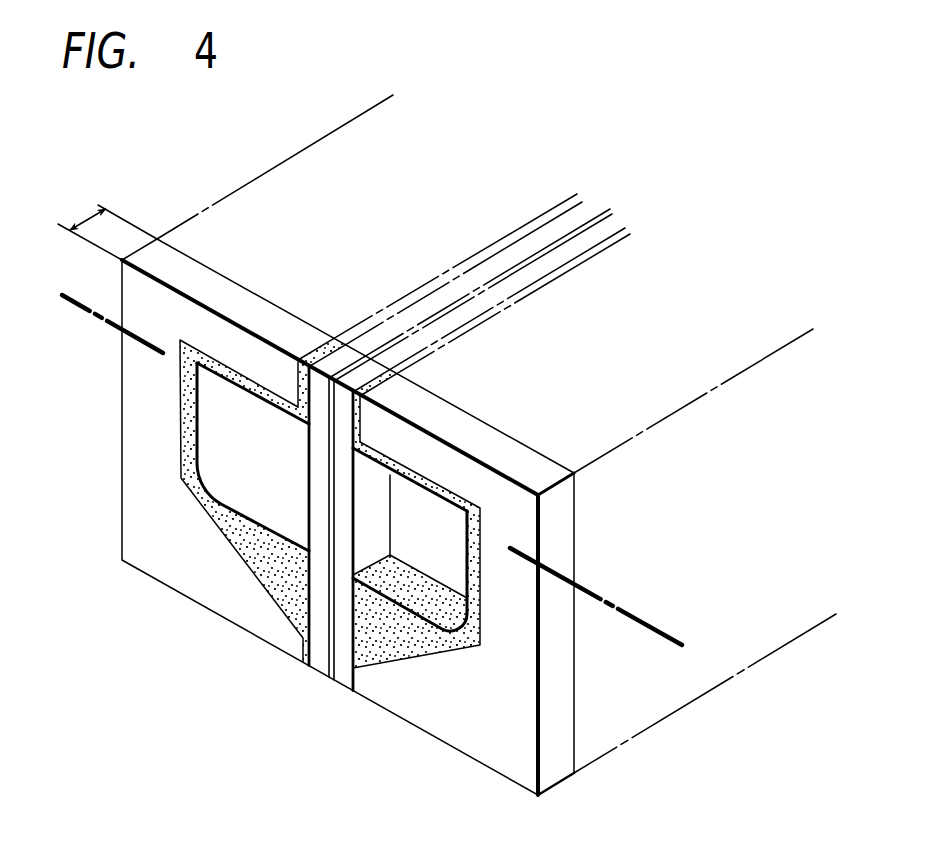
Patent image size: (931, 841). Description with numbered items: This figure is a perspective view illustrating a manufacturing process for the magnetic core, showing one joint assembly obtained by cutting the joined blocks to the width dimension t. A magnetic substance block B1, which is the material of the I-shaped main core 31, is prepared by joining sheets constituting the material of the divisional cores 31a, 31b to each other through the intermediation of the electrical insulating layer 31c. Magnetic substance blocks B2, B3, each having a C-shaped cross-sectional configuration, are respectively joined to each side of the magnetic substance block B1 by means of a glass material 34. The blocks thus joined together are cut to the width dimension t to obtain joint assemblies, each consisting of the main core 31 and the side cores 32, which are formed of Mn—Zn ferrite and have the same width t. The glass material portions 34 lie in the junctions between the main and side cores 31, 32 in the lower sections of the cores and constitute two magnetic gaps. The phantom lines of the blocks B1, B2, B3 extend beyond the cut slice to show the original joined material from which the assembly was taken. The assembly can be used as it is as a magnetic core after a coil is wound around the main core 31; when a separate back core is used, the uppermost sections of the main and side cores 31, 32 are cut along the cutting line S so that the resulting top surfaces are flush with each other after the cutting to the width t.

The main core 31 is at (304, 561).
The divisional core 31a is at (347, 682).
The divisional core 31b is at (322, 661).
The electrical insulating layer 31c is at (328, 608).
The side core 32 is at (161, 571).
The glass material portion 34 is at (258, 566).
The magnetic substance block B1 is at (423, 289).
The magnetic substance block B2 is at (228, 191).
The magnetic substance block B3 is at (752, 676).
The cutting line S is at (372, 471).
The width dimension t is at (107, 225).